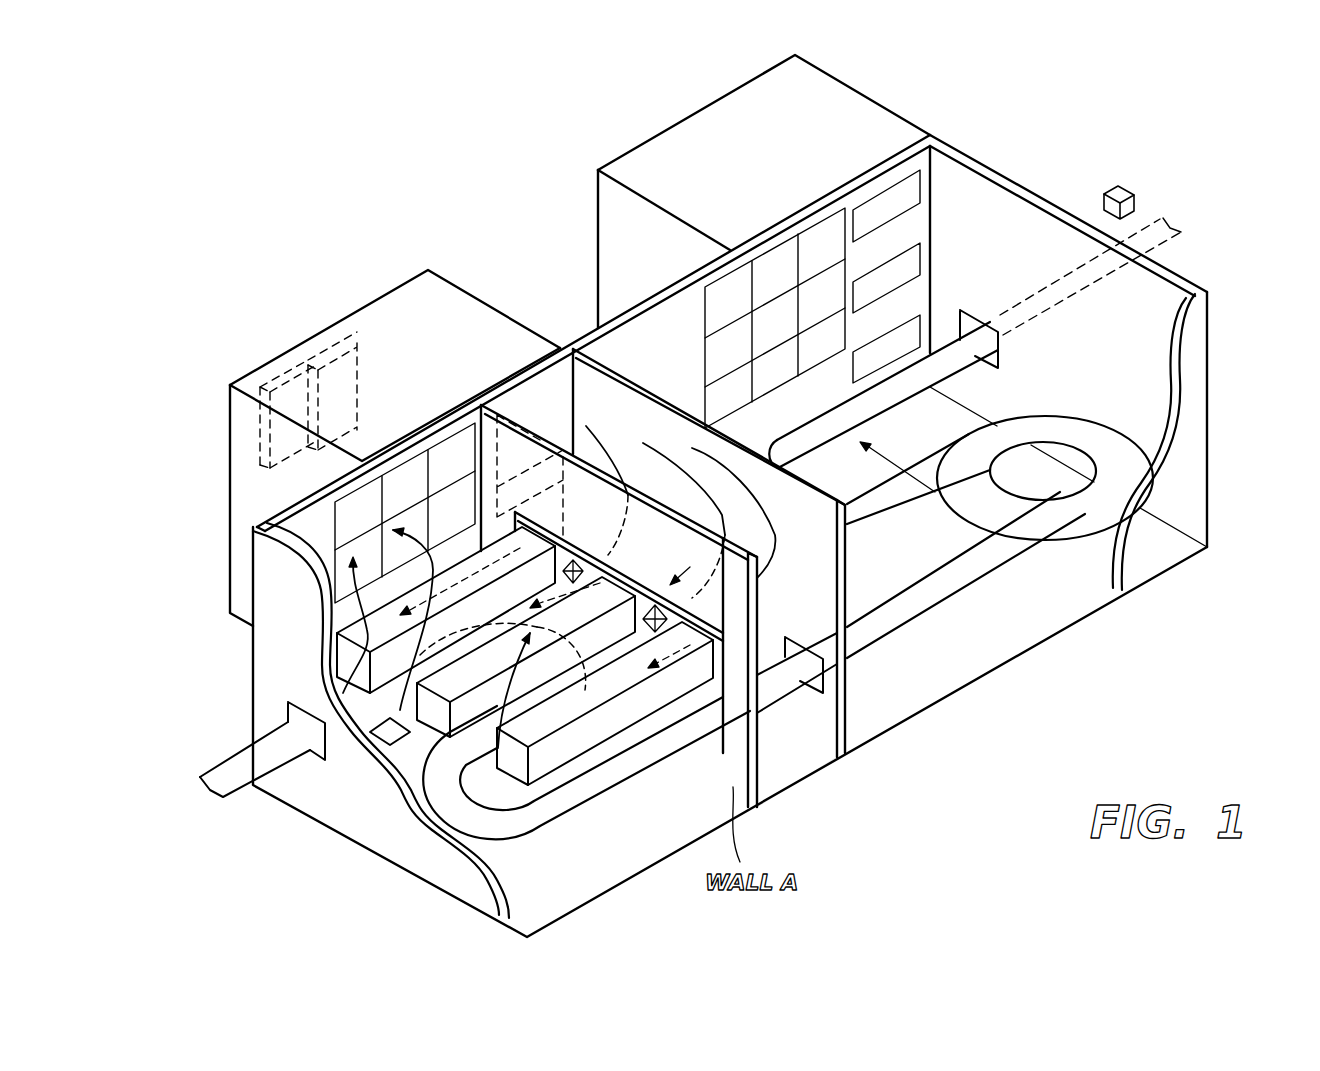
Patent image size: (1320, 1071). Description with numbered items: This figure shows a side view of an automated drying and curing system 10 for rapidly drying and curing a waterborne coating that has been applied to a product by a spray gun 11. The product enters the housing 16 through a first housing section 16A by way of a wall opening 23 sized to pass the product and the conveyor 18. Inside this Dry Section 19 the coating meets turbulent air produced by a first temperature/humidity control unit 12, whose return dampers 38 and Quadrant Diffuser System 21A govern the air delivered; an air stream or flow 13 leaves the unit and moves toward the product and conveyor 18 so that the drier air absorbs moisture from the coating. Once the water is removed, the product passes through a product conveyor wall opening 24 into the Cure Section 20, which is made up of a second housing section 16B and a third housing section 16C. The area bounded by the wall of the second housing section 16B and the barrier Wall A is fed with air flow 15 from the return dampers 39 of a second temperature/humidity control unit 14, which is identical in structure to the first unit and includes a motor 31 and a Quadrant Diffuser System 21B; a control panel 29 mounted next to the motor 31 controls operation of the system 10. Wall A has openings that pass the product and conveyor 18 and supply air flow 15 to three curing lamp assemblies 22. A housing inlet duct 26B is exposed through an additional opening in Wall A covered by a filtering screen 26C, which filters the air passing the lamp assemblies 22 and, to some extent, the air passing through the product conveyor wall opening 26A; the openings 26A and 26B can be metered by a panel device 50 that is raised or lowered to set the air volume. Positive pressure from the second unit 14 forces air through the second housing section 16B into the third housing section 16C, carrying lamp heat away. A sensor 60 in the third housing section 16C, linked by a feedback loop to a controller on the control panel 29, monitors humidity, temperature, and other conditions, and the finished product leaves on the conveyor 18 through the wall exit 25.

The automated drying and curing system 10 is at (322, 200).
The spray gun 11 is at (1122, 186).
The first temperature/humidity control unit 12 is at (764, 191).
The air stream or flow 13 is at (1077, 410).
The second temperature/humidity control unit 14 is at (395, 365).
The air flow 15 is at (413, 630).
The housing 16 is at (718, 536).
The first housing section 16A is at (1038, 643).
The second housing section 16B is at (797, 777).
The third housing section 16C is at (444, 861).
The conveyor 18 is at (893, 392).
The Dry Section 19 is at (1118, 406).
The Cure Section 20 is at (689, 563).
The Quadrant Diffuser System 21A is at (773, 325).
The Quadrant Diffuser System 21B is at (380, 497).
The curing lamp assemblies 22 is at (525, 656).
The wall opening 23 is at (965, 318).
The product conveyor wall opening 24 is at (825, 687).
The wall exit 25 is at (298, 705).
The product conveyor wall opening 26A is at (755, 620).
The housing inlet duct 26B is at (653, 590).
The filtering screen 26C is at (580, 556).
The control panel 29 is at (284, 445).
The motor 31 is at (362, 400).
The return dampers 38 is at (907, 265).
The return dampers 39 is at (543, 483).
The panel device 50 is at (727, 580).
The sensor 60 is at (383, 735).